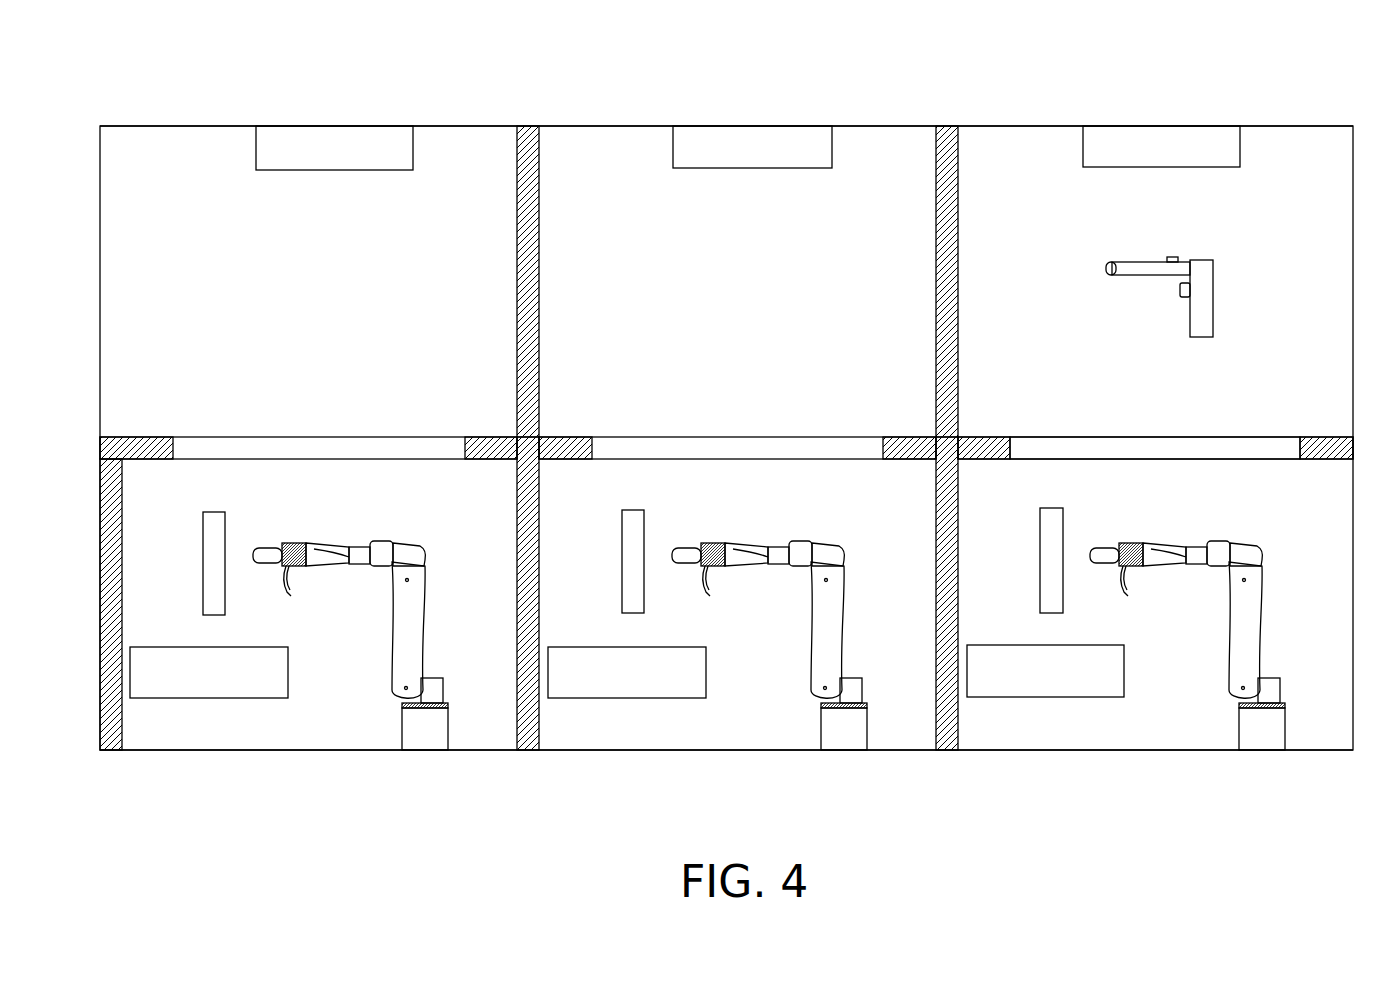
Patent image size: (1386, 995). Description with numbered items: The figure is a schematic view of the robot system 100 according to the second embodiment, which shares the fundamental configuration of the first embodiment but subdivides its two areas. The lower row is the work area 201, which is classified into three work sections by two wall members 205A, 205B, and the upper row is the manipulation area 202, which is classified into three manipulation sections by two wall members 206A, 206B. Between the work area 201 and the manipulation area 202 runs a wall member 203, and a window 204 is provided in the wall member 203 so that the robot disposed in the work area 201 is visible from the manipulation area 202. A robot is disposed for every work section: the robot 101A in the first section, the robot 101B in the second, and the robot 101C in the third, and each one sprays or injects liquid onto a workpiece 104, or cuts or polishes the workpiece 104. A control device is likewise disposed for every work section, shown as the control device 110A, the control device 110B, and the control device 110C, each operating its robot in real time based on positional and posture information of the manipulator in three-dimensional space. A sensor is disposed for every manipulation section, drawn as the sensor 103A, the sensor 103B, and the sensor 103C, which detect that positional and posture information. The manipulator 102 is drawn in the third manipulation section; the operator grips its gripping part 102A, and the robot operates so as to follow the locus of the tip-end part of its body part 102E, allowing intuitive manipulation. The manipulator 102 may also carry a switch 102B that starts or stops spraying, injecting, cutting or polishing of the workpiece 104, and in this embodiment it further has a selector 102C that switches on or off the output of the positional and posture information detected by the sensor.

The robot system 100 is at (760, 19).
The robot 101A is at (398, 540).
The robot 101B is at (817, 540).
The robot 101C is at (1232, 540).
The manipulator 102 is at (1227, 273).
The gripping part 102A is at (1213, 302).
The switch 102B is at (1178, 289).
The selector 102C is at (1172, 257).
The body part 102E is at (1117, 262).
The sensor 103A is at (256, 146).
The sensor 103B is at (673, 143).
The sensor 103C is at (1083, 144).
The workpiece 104 is at (226, 520).
The control device 110A is at (288, 672).
The control device 110B is at (706, 672).
The control device 110C is at (1124, 670).
The work area 201 is at (470, 752).
The manipulation area 202 is at (447, 126).
The wall member 203 is at (991, 437).
The window 204 is at (1147, 437).
The wall member 205A is at (517, 615).
The wall member 205B is at (936, 615).
The wall member 206A is at (517, 283).
The wall member 206B is at (936, 283).